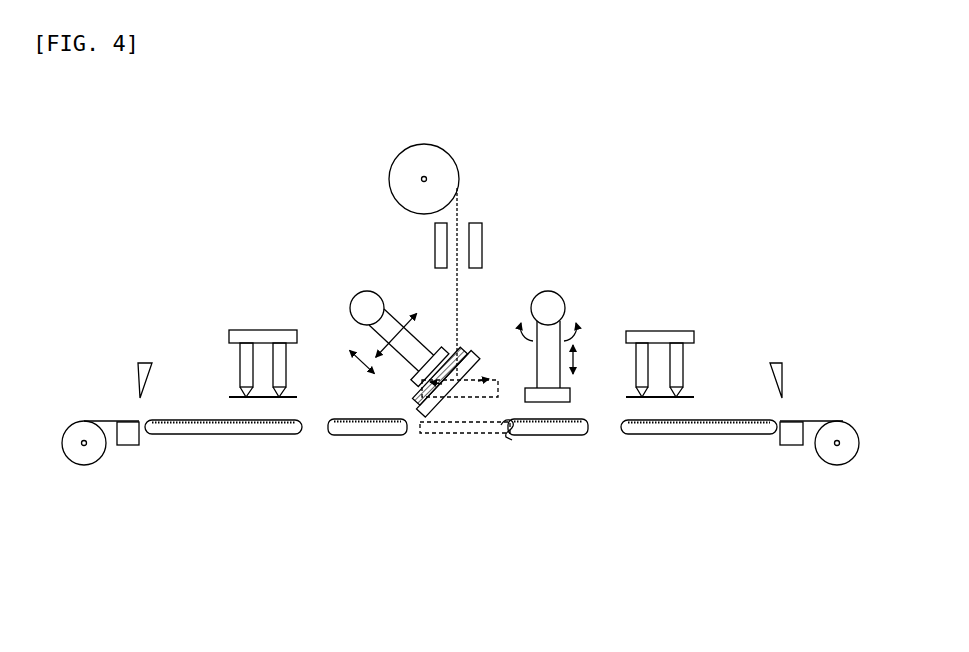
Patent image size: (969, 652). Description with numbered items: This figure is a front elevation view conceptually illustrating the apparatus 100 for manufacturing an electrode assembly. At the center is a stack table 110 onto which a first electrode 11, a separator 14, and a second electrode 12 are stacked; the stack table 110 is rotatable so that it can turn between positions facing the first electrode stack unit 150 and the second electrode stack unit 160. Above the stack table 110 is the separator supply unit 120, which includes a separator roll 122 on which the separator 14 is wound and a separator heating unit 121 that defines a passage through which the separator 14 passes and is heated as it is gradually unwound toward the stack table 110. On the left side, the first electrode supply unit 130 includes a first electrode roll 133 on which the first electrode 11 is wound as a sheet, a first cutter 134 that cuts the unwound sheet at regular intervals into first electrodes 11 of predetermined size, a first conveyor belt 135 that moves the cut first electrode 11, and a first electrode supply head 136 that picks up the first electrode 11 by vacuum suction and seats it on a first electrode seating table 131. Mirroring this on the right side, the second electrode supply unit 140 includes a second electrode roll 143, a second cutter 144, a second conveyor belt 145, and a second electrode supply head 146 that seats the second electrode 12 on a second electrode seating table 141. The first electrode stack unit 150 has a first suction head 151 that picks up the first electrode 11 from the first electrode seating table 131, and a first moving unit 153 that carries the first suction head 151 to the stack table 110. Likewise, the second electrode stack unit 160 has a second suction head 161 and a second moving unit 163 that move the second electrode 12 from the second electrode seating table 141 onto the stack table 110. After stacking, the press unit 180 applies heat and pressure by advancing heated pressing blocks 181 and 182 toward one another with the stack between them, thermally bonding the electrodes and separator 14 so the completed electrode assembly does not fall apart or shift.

The apparatus for manufacturing an electrode assembly 100 is at (97, 167).
The first electrode 11 is at (365, 418).
The second electrode 12 is at (508, 441).
The separator 14 is at (459, 191).
The stack table 110 is at (473, 353).
The separator supply unit 120 is at (600, 128).
The separator heating unit 121 is at (482, 245).
The separator roll 122 is at (424, 144).
The first electrode supply unit 130 is at (312, 578).
The first electrode seating table 131 is at (367, 435).
The first electrode roll 133 is at (84, 465).
The first cutter 134 is at (143, 362).
The first conveyor belt 135 is at (223, 434).
The first electrode supply head 136 is at (229, 336).
The second electrode supply unit 140 is at (432, 578).
The second electrode seating table 141 is at (549, 435).
The second electrode roll 143 is at (838, 465).
The second cutter 144 is at (780, 362).
The second conveyor belt 145 is at (698, 434).
The second electrode supply head 146 is at (694, 336).
The first electrode stack unit 150 is at (676, 128).
The first suction head 151 is at (441, 347).
The first moving unit 153 is at (367, 291).
The second electrode stack unit 160 is at (753, 128).
The second suction head 161 is at (570, 395).
The second moving unit 163 is at (548, 291).
The press unit 180 is at (829, 128).
The heated pressing block 181 is at (446, 434).
The heated pressing block 182 is at (497, 381).